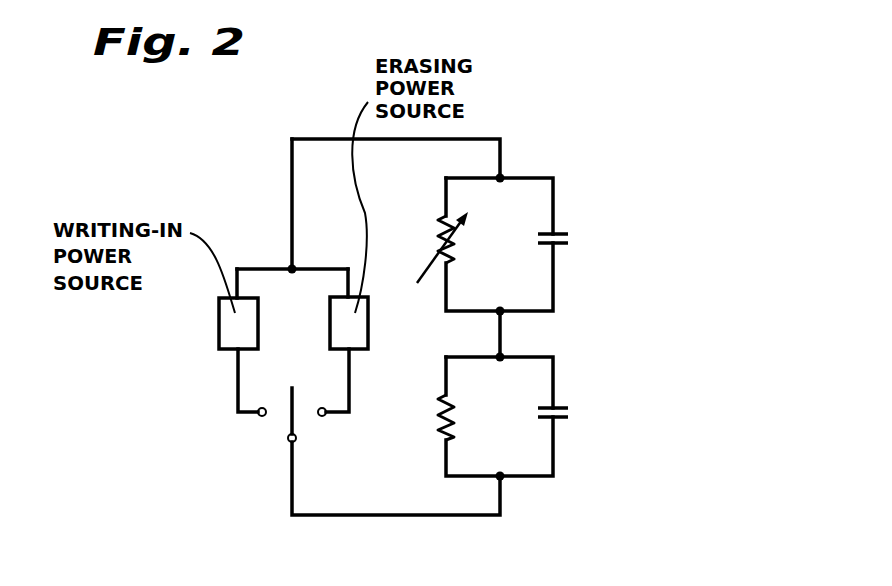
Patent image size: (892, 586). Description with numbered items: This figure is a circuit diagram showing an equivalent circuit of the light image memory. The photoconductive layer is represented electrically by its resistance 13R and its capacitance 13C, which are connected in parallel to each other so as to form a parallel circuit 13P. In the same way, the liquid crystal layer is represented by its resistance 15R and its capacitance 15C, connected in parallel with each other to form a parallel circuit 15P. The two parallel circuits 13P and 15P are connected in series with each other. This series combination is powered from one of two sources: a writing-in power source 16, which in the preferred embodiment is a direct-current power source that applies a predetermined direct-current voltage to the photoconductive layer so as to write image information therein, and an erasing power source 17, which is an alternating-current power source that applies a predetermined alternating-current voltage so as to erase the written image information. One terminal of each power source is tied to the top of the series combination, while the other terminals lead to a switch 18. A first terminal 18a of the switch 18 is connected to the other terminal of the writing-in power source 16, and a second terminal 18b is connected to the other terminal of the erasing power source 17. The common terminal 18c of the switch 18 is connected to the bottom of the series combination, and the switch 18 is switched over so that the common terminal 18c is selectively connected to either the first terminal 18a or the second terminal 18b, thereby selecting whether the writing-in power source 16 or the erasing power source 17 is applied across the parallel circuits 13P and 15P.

The resistance of the photoconductive layer 13R is at (455, 243).
The capacitance of the photoconductive layer 13C is at (567, 237).
The parallel circuit 13P is at (598, 232).
The resistance of the liquid crystal layer 15R is at (455, 415).
The capacitance of the liquid crystal layer 15C is at (567, 412).
The parallel circuit 15P is at (608, 405).
The writing-in power source 16 is at (217, 318).
The erasing power source 17 is at (368, 317).
The switch 18 is at (251, 475).
The first terminal 18a is at (258, 418).
The second terminal 18b is at (322, 417).
The common terminal 18c is at (288, 442).